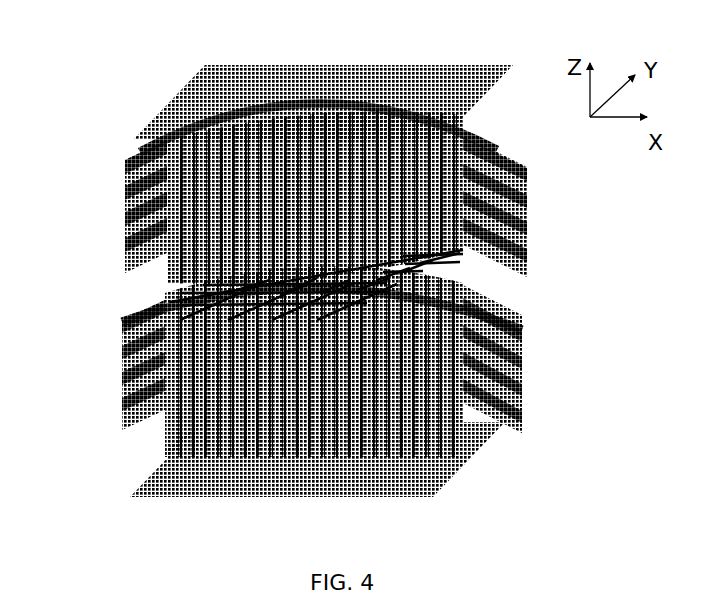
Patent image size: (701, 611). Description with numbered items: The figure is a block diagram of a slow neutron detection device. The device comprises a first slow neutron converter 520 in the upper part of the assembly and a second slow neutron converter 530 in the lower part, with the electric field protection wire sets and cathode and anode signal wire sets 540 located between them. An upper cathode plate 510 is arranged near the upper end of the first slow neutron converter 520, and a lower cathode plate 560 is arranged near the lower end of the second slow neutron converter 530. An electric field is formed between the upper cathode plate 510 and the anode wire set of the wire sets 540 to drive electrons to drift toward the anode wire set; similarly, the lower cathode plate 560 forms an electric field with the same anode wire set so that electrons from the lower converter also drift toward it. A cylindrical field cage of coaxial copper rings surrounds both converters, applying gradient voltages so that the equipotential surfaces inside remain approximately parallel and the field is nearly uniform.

The upper cathode plate 510 is at (170, 104).
The first slow neutron converter 520 is at (168, 219).
The second slow neutron converter 530 is at (162, 392).
The electric field protection wire sets and cathode and anode signal wire sets 540 is at (180, 297).
The lower cathode plate 560 is at (148, 472).